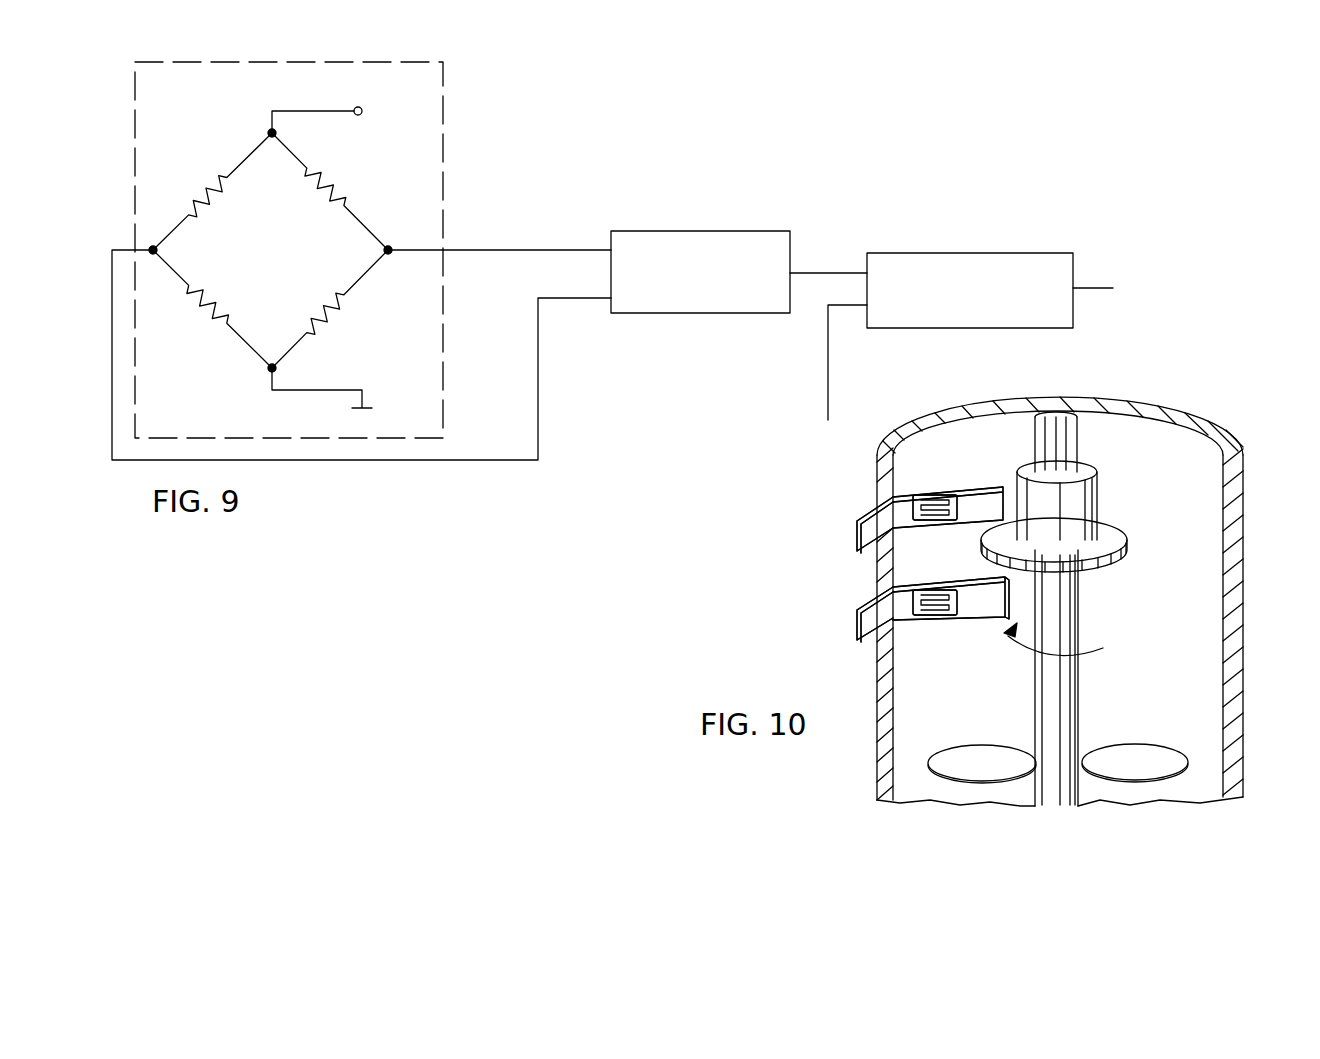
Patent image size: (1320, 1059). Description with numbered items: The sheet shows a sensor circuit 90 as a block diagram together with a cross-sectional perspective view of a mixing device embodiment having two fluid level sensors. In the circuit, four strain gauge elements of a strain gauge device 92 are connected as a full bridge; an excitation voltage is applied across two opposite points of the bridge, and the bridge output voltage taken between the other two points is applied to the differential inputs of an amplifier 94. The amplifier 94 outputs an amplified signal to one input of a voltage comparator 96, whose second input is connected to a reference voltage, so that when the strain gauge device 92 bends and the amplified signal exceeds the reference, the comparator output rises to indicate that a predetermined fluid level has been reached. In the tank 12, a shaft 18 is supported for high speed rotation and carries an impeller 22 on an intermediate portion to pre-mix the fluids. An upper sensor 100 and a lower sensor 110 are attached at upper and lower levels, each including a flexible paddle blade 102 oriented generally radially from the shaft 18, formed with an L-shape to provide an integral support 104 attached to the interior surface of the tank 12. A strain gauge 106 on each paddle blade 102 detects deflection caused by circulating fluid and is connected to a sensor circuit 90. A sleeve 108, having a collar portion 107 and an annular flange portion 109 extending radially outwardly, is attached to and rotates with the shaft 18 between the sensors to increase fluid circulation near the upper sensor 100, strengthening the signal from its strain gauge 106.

In FIG. 9, the sensor circuit 90 is at (598, 138).
In FIG. 9, the strain gauge device 92 is at (425, 147).
In FIG. 9, the amplifier 94 is at (725, 231).
In FIG. 9, the voltage comparator 96 is at (942, 265).
In FIG. 10, the tank 12 is at (1233, 583).
In FIG. 10, the shaft 18 is at (1062, 698).
In FIG. 10, the impeller 22 is at (1130, 758).
In FIG. 10, the upper sensor 100 is at (845, 546).
In FIG. 10, the paddle blade 102 is at (984, 493).
In FIG. 10, the integral support 104 is at (868, 513).
In FIG. 10, the strain gauge 106 is at (930, 504).
In FIG. 10, the collar portion 107 is at (1070, 518).
In FIG. 10, the sleeve 108 is at (1110, 486).
In FIG. 10, the annular flange portion 109 is at (1105, 543).
In FIG. 10, the lower sensor 110 is at (846, 634).